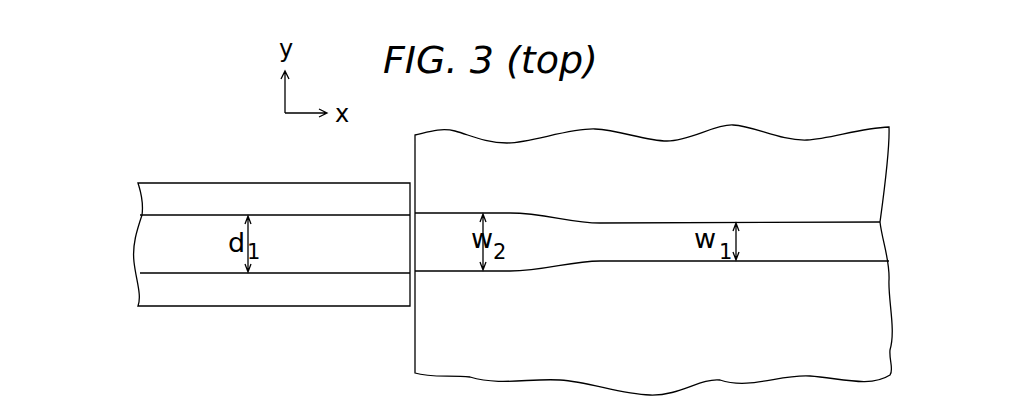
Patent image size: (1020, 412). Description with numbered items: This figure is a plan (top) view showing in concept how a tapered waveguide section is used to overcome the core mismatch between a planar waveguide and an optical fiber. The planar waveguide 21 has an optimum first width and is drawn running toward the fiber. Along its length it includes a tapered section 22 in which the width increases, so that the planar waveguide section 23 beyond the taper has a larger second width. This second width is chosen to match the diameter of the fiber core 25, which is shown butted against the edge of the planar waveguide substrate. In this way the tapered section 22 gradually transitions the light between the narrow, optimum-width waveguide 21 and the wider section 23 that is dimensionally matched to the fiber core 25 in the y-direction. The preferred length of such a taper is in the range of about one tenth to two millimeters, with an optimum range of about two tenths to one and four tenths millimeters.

The planar waveguide 21 is at (664, 222).
The tapered section 22 is at (595, 302).
The planar waveguide section 23 is at (467, 214).
The fiber core 25 is at (138, 243).